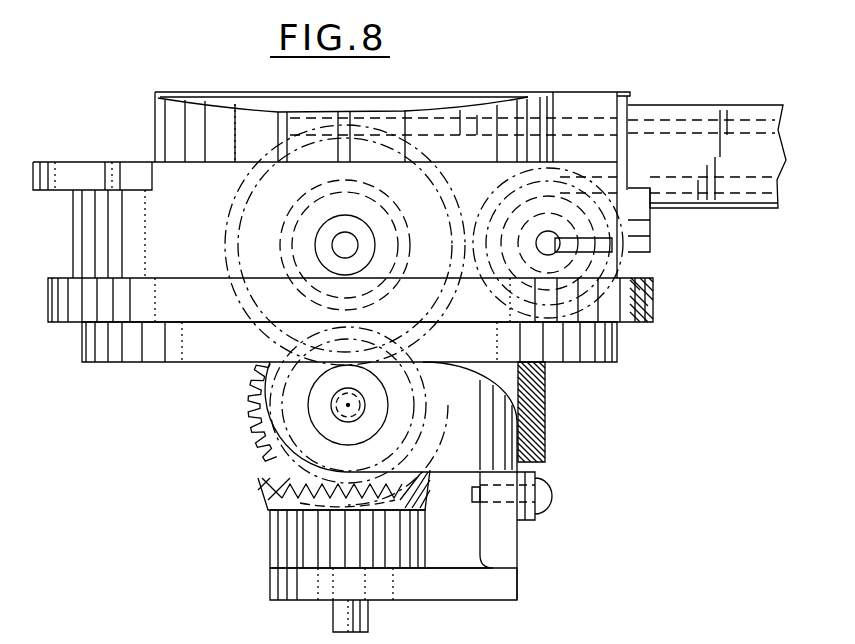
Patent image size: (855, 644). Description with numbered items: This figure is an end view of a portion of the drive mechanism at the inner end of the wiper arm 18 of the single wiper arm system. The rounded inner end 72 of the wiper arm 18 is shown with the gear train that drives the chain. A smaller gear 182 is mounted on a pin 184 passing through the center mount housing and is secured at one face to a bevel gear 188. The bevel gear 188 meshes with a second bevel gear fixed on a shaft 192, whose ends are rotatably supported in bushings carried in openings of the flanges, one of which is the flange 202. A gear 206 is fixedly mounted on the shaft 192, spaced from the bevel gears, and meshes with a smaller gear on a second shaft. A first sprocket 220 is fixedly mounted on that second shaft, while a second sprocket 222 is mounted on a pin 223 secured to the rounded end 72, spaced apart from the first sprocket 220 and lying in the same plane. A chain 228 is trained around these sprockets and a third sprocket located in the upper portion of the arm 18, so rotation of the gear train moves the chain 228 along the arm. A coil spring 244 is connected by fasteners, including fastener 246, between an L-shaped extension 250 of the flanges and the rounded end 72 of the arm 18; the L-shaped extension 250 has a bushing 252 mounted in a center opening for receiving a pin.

The wiper arm 18 is at (692, 106).
The rounded inner end 72 is at (155, 130).
The gear 182 is at (270, 548).
The pin 184 is at (338, 618).
The bevel gear 188 is at (280, 505).
The shaft 192 is at (335, 415).
The flange 202 is at (480, 440).
The gear 206 is at (250, 398).
The first sprocket 220 is at (242, 210).
The second sprocket 222 is at (640, 327).
The pin 223 is at (655, 243).
The chain 228 is at (742, 222).
The coil spring 244 is at (540, 408).
The fastener 246 is at (540, 508).
The L-shaped extension 250 is at (505, 576).
The bushing 252 is at (395, 584).